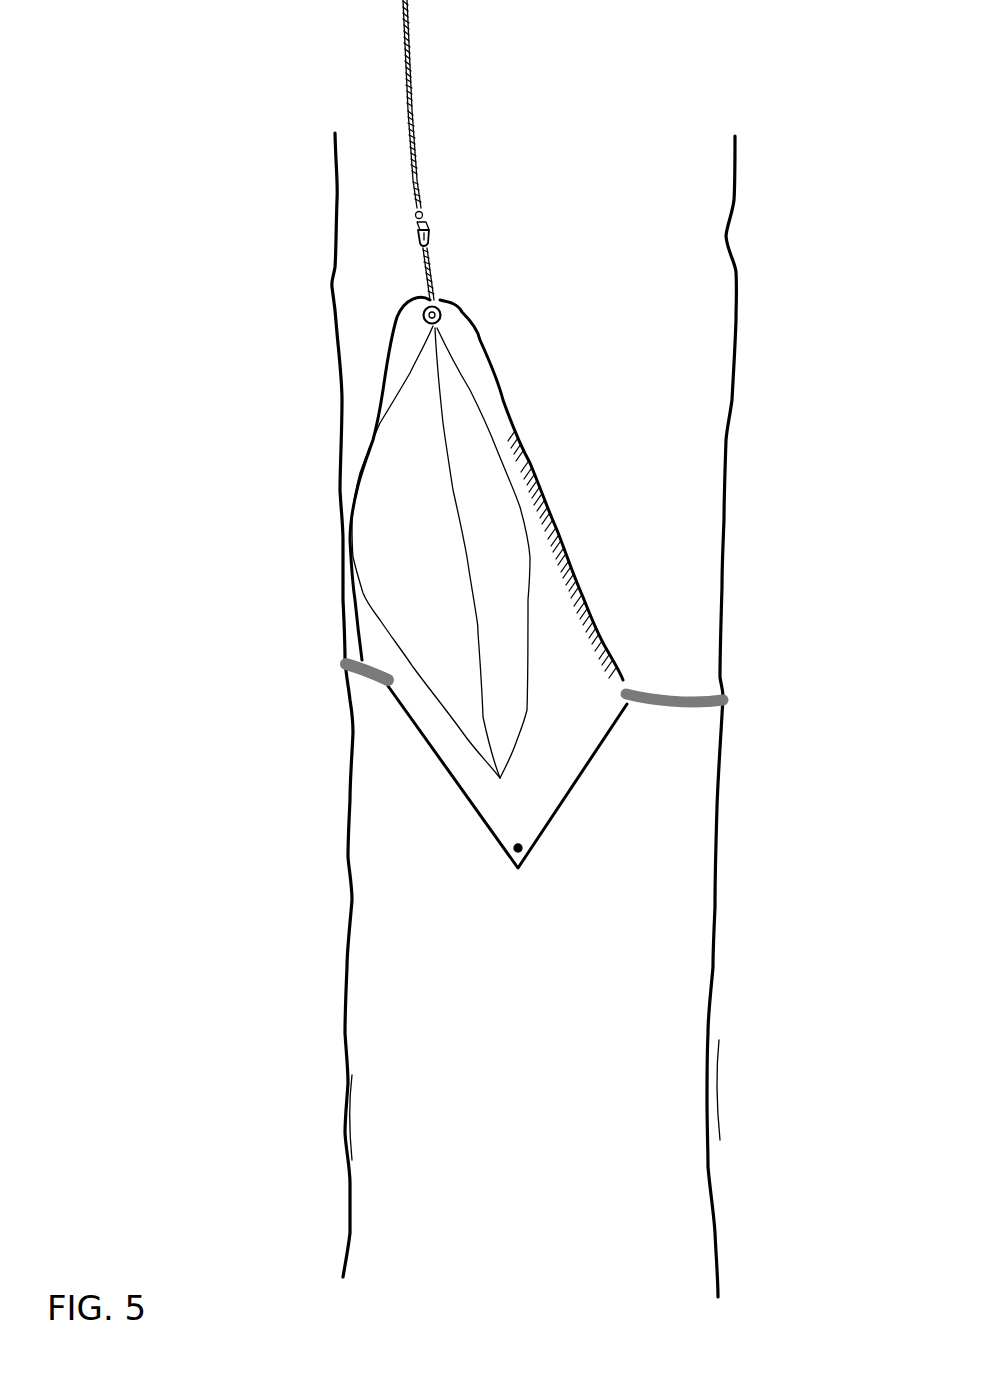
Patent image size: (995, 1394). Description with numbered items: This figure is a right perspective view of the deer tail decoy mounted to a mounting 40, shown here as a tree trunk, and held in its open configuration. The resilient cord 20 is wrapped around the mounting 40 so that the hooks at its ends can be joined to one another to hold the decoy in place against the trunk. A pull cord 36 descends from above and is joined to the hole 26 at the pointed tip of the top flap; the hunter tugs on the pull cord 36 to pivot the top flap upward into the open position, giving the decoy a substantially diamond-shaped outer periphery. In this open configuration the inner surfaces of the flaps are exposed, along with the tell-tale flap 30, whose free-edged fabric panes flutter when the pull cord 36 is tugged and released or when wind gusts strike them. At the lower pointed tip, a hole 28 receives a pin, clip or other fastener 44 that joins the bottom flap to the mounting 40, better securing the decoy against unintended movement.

The resilient cord 20 is at (723, 697).
The hole 26 is at (423, 311).
The hole 28 is at (530, 846).
The tell-tale flap 30 is at (370, 570).
The pull cord 36 is at (410, 115).
The mounting 40 is at (715, 962).
The fastener 44 is at (522, 850).